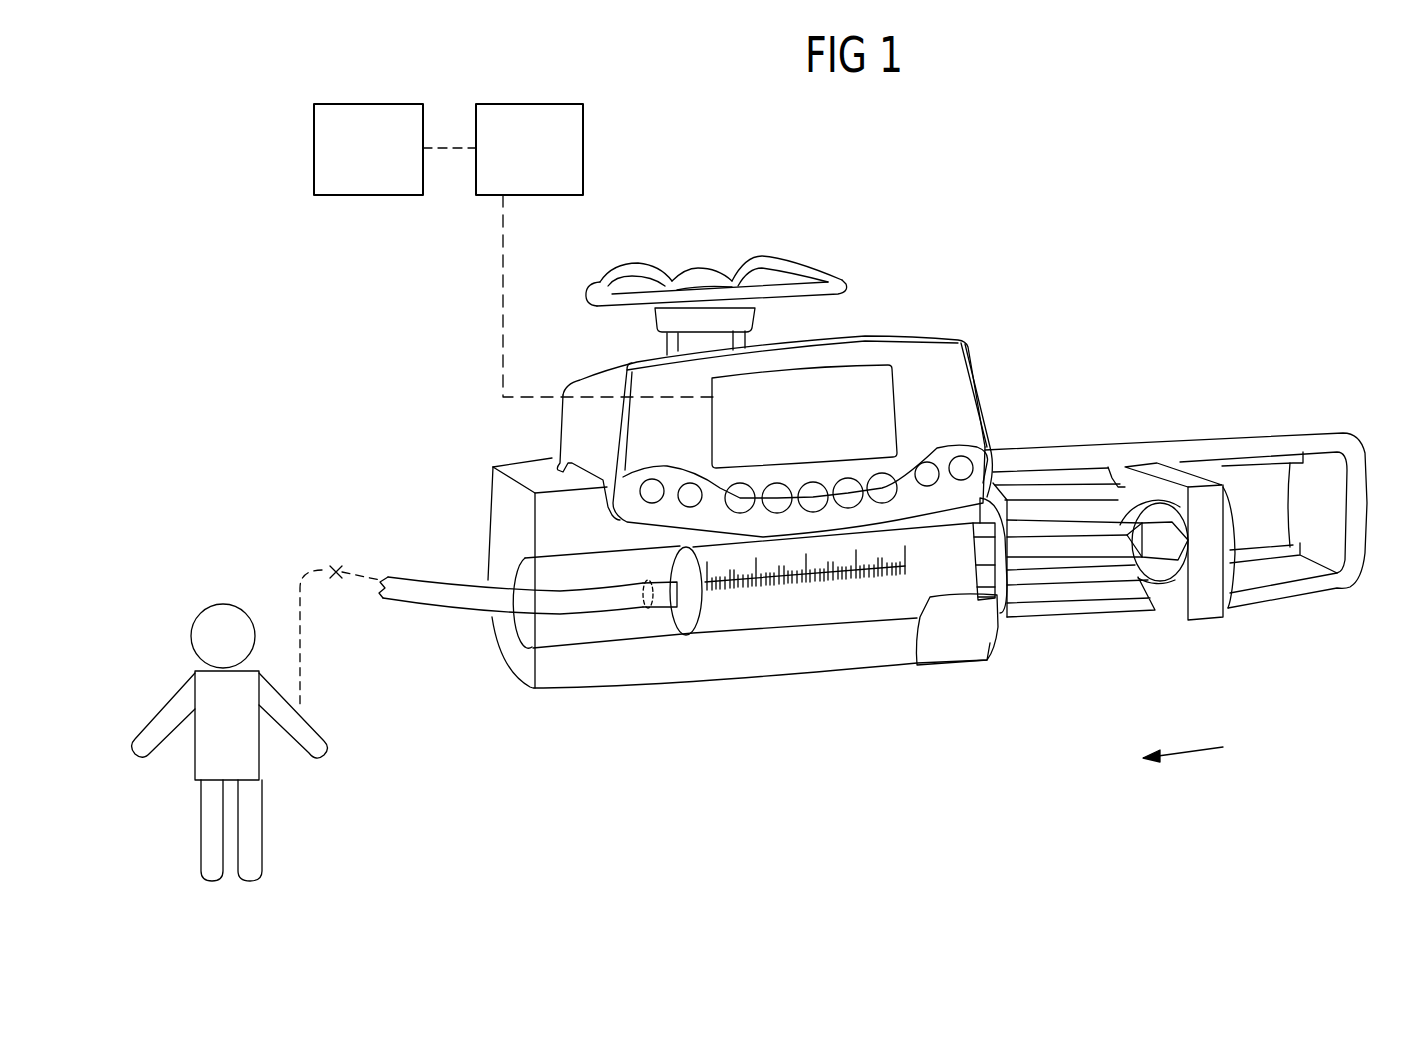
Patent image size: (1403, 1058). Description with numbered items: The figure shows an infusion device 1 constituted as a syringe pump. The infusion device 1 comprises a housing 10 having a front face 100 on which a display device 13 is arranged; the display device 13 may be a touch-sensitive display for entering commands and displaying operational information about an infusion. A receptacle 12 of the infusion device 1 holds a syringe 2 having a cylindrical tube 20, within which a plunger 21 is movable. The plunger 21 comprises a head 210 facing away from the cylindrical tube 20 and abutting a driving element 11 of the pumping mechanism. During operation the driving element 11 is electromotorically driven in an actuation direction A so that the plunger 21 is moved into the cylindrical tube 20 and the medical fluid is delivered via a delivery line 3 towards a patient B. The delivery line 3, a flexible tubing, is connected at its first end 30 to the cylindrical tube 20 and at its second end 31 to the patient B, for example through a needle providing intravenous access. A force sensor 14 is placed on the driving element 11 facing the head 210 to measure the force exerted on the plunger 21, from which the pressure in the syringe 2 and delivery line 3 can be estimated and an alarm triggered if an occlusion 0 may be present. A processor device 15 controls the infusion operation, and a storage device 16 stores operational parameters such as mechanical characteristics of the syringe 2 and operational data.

The infusion device 1 is at (486, 467).
The syringe 2 is at (799, 607).
The delivery line 3 is at (469, 600).
The housing 10 is at (932, 333).
The driving element 11 is at (1207, 603).
The receptacle 12 is at (913, 630).
The display device 13 is at (863, 383).
The force sensor 14 is at (1178, 523).
The processor device 15 is at (513, 123).
The storage device 16 is at (367, 125).
The cylindrical tube 20 is at (893, 610).
The plunger 21 is at (1058, 573).
The first end of the delivery line 30 is at (660, 600).
The second end of the delivery line 31 is at (302, 709).
The front face 100 is at (957, 392).
The head 210 is at (1173, 580).
The occlusion 0 is at (336, 545).
The actuation direction A is at (1183, 767).
The patient B is at (293, 854).